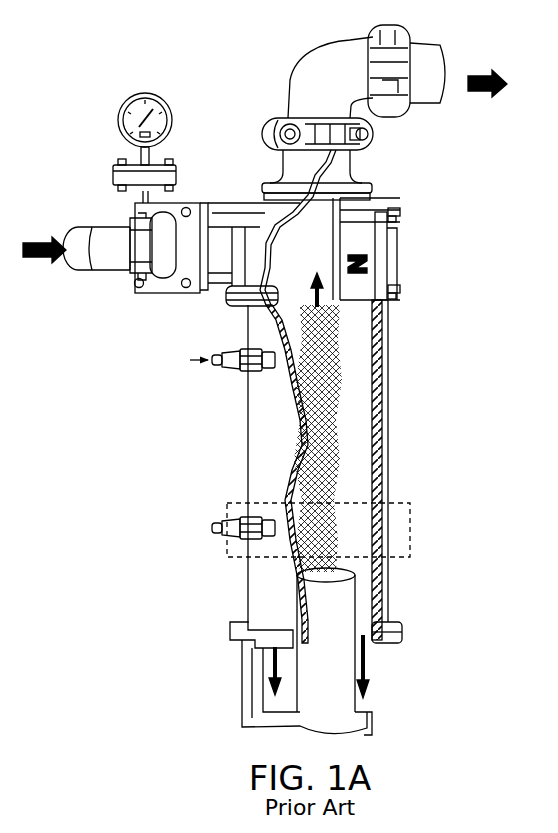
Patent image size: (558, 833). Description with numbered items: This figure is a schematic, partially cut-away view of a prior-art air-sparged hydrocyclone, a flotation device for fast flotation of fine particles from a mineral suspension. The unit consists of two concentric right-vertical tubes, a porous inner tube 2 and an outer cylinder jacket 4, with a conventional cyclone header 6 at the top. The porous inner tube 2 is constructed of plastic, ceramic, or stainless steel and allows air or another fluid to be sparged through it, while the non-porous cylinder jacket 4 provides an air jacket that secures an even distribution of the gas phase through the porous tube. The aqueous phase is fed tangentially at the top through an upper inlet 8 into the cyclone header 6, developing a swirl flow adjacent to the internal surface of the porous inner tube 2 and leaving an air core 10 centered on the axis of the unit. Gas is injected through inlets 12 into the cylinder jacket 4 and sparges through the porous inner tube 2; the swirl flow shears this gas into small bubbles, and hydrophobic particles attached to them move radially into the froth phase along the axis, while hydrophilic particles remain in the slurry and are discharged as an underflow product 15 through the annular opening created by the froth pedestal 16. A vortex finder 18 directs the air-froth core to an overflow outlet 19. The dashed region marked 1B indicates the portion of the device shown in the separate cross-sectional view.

The detail region of filter port 1B is at (227, 546).
The porous inner tube 2 is at (379, 352).
The outer cylinder jacket 4 is at (390, 472).
The cyclone header 6 is at (391, 239).
The upper inlet 8 is at (66, 226).
The air core 10 is at (317, 548).
The inlets 12 is at (218, 514).
The underflow product 15 is at (372, 668).
The froth pedestal 16 is at (344, 628).
The vortex finder 18 is at (343, 284).
The overflow outlet 19 is at (447, 53).